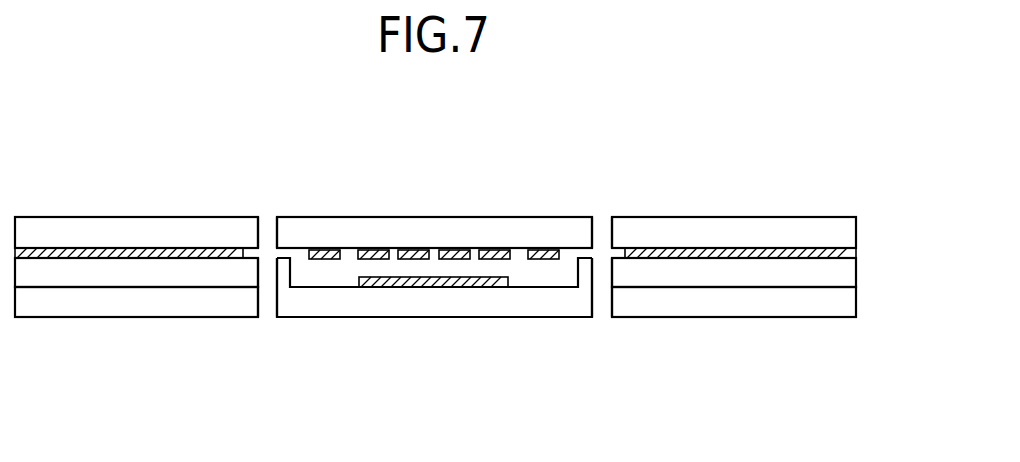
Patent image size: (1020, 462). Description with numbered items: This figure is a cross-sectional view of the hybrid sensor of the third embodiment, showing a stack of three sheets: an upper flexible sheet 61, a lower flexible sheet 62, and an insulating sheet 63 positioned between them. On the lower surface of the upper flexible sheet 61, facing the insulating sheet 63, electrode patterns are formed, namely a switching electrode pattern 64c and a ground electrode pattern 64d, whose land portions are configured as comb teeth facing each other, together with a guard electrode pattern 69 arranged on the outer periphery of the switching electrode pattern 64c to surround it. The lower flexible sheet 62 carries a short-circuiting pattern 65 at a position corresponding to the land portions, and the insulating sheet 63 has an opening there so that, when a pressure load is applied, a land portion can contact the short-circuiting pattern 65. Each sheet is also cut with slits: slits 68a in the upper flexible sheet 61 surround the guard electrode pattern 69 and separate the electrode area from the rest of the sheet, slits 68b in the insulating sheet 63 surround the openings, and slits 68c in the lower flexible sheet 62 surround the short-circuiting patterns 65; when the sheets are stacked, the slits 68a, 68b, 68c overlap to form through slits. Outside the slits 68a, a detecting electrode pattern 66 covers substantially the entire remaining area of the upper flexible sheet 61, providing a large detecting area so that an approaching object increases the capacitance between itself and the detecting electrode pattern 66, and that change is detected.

The upper flexible sheet 61 is at (840, 230).
The lower flexible sheet 62 is at (840, 300).
The insulating sheet 63 is at (837, 270).
The switching electrode pattern 64c is at (377, 250).
The ground electrode pattern 64d is at (417, 250).
The short-circuiting pattern 65 is at (432, 287).
The detecting electrode pattern 66 is at (180, 250).
The slit 68a is at (266, 225).
The slit 68b is at (262, 270).
The slit 68c is at (268, 305).
The guard electrode pattern 69 is at (323, 250).